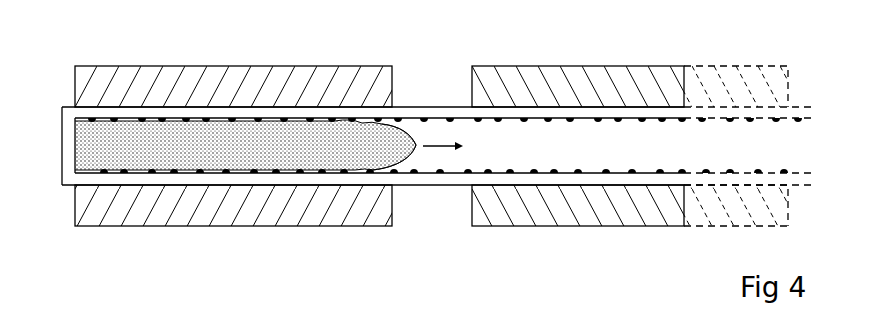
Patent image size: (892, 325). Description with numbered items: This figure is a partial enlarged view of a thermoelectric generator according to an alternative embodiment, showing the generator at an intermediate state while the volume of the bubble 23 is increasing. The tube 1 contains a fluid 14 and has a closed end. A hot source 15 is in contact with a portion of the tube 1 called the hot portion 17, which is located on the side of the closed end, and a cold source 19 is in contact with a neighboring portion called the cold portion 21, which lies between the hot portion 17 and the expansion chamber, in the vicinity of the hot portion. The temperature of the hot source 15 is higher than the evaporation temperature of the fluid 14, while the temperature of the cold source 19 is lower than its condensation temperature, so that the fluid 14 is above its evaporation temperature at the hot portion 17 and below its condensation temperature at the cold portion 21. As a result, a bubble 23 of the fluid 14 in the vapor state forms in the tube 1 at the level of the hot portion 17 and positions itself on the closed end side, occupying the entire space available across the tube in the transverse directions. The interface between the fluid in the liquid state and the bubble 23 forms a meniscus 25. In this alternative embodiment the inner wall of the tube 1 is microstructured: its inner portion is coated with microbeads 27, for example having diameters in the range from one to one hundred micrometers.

The tube 1 is at (423, 107).
The fluid 14 is at (542, 148).
The hot source 15 is at (150, 82).
The hot portion 17 is at (223, 117).
The cold source 19 is at (547, 80).
The cold portion 21 is at (603, 110).
The bubble 23 is at (82, 152).
The meniscus 25 is at (397, 162).
The microbeads 27 is at (433, 173).